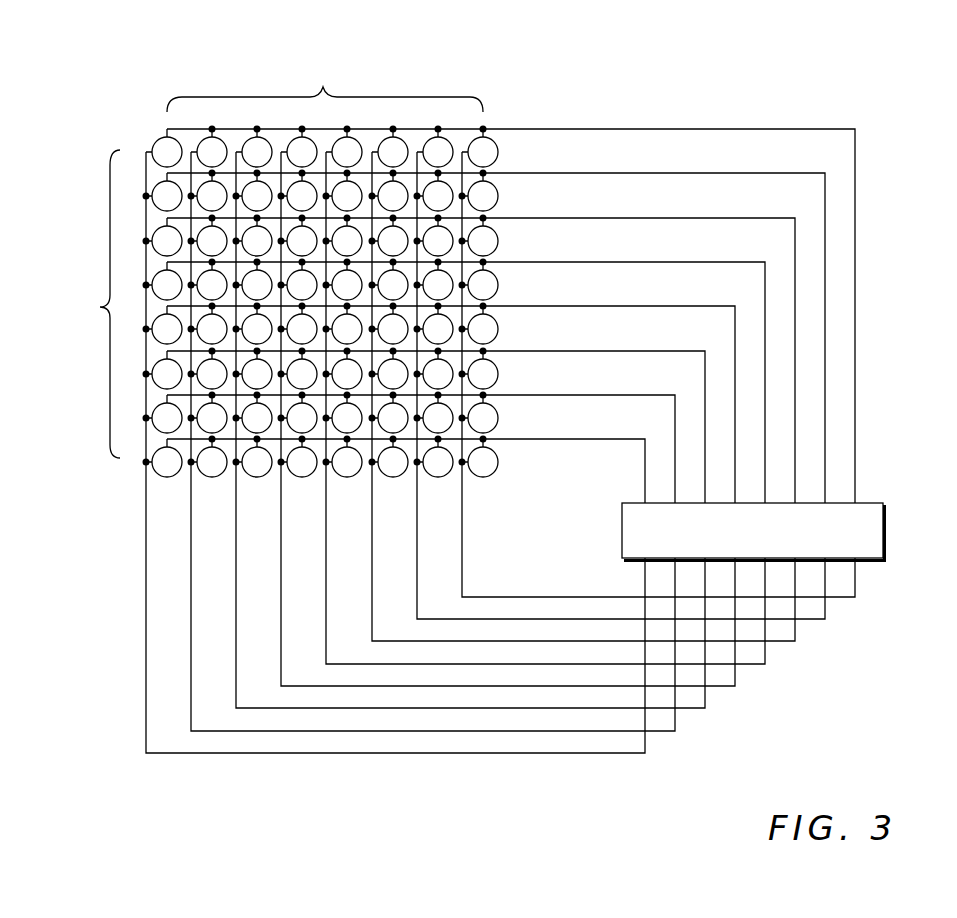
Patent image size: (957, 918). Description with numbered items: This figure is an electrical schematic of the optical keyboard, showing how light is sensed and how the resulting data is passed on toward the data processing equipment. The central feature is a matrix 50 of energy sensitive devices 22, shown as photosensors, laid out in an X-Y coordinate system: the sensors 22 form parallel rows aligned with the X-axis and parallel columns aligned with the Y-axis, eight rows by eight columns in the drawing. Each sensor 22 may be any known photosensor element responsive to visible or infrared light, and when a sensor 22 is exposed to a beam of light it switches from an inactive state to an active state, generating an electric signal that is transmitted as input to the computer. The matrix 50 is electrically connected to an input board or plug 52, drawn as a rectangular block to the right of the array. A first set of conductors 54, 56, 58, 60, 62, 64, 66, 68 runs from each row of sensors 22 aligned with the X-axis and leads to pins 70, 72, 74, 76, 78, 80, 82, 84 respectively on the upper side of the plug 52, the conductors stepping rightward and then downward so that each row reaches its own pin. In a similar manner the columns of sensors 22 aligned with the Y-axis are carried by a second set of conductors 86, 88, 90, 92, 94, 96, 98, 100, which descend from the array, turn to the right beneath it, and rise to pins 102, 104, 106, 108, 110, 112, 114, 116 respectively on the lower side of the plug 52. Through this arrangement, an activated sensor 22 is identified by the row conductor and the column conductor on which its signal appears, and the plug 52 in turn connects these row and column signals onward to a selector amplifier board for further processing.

The energy sensitive device 22 is at (161, 139).
The matrix 50 is at (419, 81).
The input board 52 is at (884, 525).
The conductor 54 is at (625, 130).
The conductor 56 is at (625, 174).
The conductor 58 is at (625, 219).
The conductor 60 is at (625, 263).
The conductor 62 is at (625, 307).
The conductor 64 is at (625, 352).
The conductor 66 is at (625, 396).
The conductor 68 is at (625, 440).
The pin 70 is at (856, 502).
The pin 72 is at (826, 502).
The pin 74 is at (796, 502).
The pin 76 is at (766, 502).
The pin 78 is at (736, 502).
The pin 80 is at (706, 502).
The pin 82 is at (676, 502).
The pin 84 is at (646, 502).
The conductor 86 is at (146, 500).
The conductor 88 is at (191, 500).
The conductor 90 is at (236, 500).
The conductor 92 is at (281, 500).
The conductor 94 is at (326, 500).
The conductor 96 is at (372, 500).
The conductor 98 is at (417, 500).
The conductor 100 is at (462, 500).
The pin 102 is at (646, 560).
The pin 104 is at (676, 560).
The pin 106 is at (706, 560).
The pin 108 is at (736, 560).
The pin 110 is at (766, 560).
The pin 112 is at (796, 560).
The pin 114 is at (826, 560).
The pin 116 is at (856, 560).